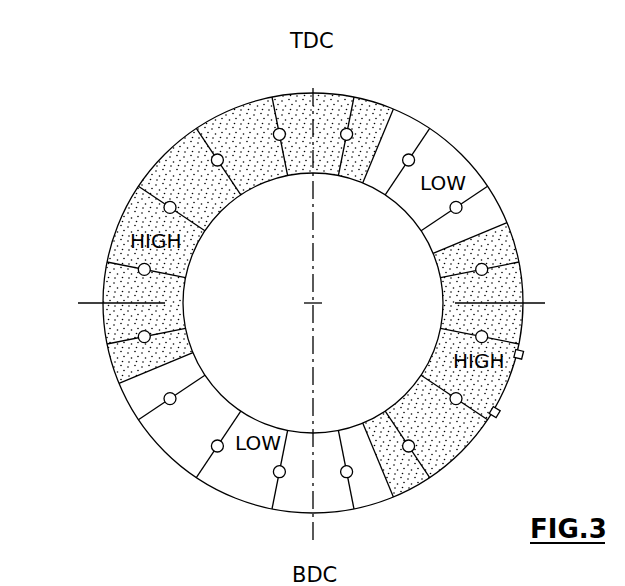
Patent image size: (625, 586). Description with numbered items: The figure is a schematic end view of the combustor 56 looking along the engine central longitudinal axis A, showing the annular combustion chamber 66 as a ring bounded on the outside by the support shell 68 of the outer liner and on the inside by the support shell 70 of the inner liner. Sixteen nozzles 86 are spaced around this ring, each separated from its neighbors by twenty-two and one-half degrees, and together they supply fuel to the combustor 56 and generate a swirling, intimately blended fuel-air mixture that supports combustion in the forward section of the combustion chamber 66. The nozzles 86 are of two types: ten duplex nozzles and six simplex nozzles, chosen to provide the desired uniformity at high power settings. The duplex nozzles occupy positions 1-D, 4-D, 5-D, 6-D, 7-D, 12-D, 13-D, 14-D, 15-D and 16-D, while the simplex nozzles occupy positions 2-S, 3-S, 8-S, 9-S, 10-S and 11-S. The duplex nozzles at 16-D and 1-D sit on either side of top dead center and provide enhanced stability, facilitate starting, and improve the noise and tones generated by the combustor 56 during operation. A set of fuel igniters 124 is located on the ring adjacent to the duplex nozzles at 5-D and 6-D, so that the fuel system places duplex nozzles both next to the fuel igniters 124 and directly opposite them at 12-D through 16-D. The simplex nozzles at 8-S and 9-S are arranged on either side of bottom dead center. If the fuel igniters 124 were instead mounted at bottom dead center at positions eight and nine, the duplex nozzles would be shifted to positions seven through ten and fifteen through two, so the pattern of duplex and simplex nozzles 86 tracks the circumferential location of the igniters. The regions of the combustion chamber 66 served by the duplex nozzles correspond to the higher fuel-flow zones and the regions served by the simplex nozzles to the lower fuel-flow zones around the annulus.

The combustor 56 is at (127, 82).
The nozzles 86 is at (357, 83).
The combustion chamber 66 is at (468, 231).
The support shell 68 is at (395, 497).
The support shell 70 is at (354, 424).
The fuel igniters 124 is at (523, 362).
The engine central longitudinal axis A is at (315, 305).
The duplex nozzle position one 1-D is at (354, 97).
The simplex nozzle position two 2-S is at (430, 128).
The simplex nozzle position three 3-S is at (488, 186).
The duplex nozzle position four 4-D is at (519, 262).
The duplex nozzle position five 5-D is at (519, 344).
The duplex nozzle position six 6-D is at (488, 420).
The duplex nozzle position seven 7-D is at (430, 478).
The simplex nozzle position eight 8-S is at (354, 509).
The simplex nozzle position nine 9-S is at (272, 509).
The simplex nozzle position ten 10-S is at (196, 478).
The simplex nozzle position eleven 11-S is at (138, 420).
The duplex nozzle position twelve 12-D is at (107, 344).
The duplex nozzle position thirteen 13-D is at (107, 262).
The duplex nozzle position fourteen 14-D is at (138, 186).
The duplex nozzle position fifteen 15-D is at (196, 128).
The duplex nozzle position sixteen 16-D is at (272, 97).